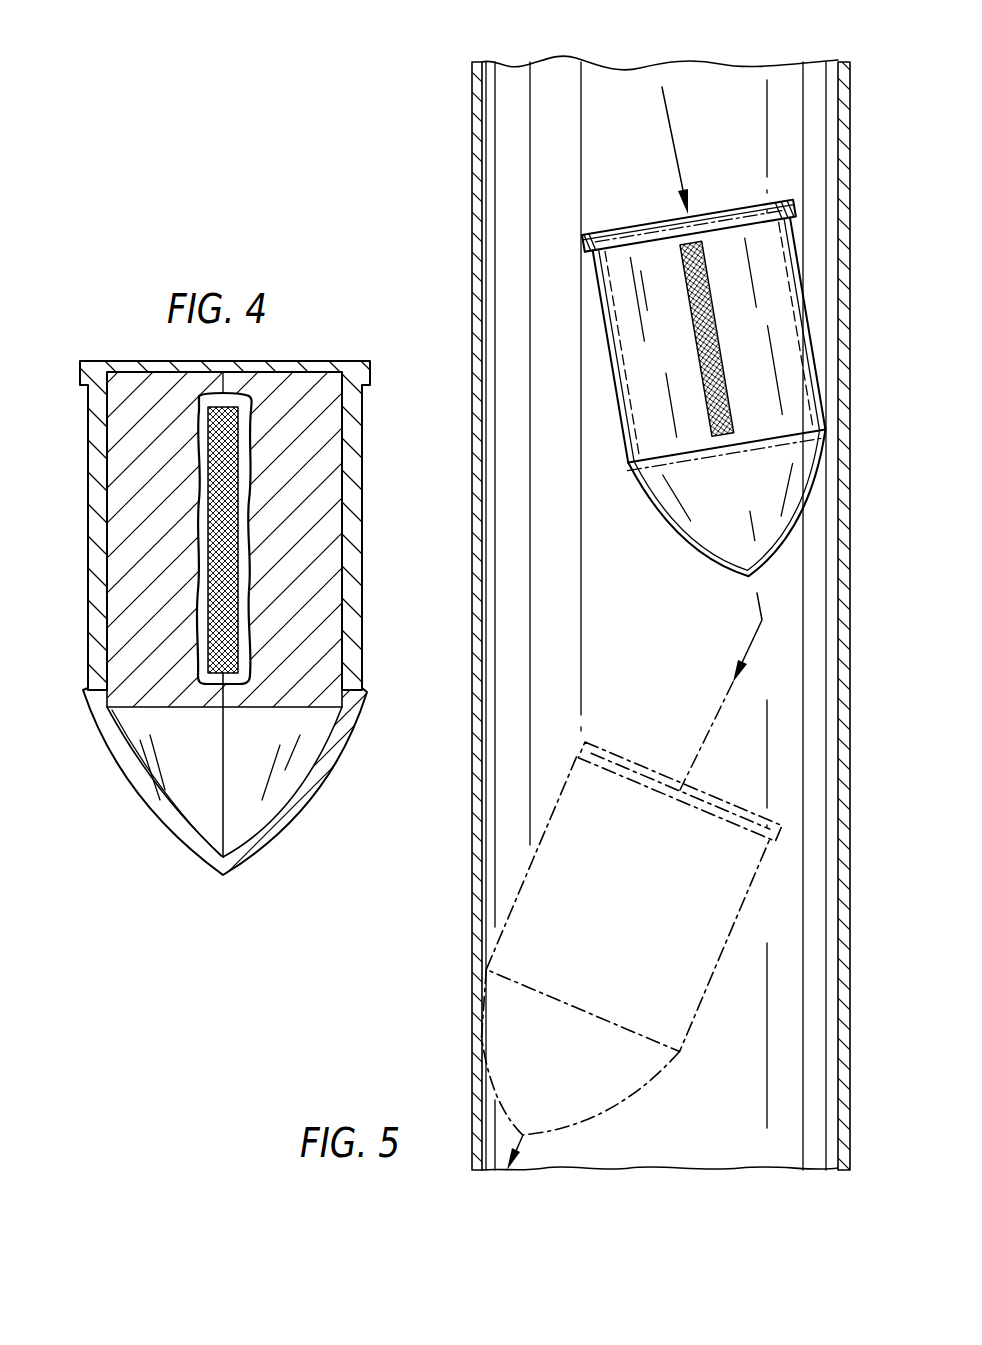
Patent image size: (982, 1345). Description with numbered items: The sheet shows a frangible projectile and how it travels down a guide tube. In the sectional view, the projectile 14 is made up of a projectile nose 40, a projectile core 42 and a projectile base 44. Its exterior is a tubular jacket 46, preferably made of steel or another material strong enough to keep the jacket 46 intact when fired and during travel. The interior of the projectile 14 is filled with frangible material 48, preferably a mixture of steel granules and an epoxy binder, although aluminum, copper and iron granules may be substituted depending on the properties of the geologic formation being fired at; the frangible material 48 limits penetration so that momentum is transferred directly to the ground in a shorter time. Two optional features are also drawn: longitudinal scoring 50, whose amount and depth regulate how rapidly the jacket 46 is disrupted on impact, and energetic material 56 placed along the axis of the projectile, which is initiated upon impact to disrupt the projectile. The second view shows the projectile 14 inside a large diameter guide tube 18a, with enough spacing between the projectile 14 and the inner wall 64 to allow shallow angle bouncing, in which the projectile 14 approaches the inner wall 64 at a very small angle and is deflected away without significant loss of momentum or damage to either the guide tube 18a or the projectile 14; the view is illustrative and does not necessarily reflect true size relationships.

In FIG. 4, the projectile 14 is at (130, 360).
In FIG. 5, the projectile 14 is at (653, 222).
In FIG. 5, the large diameter guide tube 18a is at (769, 62).
In FIG. 4, the projectile nose 40 is at (74, 690).
In FIG. 4, the projectile core 42 is at (74, 385).
In FIG. 4, the projectile base 44 is at (74, 361).
In FIG. 4, the tubular jacket 46 is at (362, 405).
In FIG. 4, the frangible material 48 is at (303, 670).
In FIG. 4, the longitudinal scoring 50 is at (240, 564).
In FIG. 5, the longitudinal scoring 50 is at (697, 333).
In FIG. 4, the energetic material 56 is at (220, 813).
In FIG. 5, the inner wall 64 is at (845, 572).